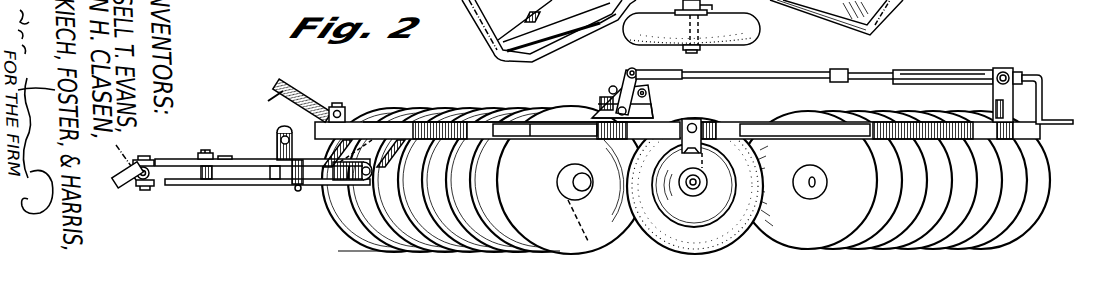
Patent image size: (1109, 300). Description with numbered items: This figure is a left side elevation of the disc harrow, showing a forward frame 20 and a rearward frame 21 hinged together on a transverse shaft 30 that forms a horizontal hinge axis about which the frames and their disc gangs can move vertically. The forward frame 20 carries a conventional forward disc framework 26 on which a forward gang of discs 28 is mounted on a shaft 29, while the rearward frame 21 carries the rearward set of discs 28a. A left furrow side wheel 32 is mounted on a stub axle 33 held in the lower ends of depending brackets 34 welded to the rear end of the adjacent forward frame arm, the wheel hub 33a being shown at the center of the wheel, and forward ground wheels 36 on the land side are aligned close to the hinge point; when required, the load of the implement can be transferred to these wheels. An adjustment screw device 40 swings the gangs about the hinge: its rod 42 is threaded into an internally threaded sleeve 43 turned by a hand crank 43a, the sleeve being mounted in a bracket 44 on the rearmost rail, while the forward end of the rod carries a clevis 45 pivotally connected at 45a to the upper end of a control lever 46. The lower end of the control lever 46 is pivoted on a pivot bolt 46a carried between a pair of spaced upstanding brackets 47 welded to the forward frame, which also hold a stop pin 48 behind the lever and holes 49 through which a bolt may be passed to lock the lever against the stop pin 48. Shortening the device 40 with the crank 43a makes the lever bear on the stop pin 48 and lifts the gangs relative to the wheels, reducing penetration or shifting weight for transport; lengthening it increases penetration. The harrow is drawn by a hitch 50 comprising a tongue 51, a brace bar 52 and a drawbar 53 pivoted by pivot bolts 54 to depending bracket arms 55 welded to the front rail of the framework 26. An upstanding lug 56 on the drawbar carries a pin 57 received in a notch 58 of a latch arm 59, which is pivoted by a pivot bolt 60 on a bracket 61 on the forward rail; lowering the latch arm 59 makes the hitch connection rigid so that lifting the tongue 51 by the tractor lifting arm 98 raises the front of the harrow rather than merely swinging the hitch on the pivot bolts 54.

The forward frame 20 is at (502, 118).
The rearward frame 21 is at (748, 118).
The forward disc framework 26 is at (441, 122).
The forward gang of discs 28 is at (345, 218).
The rearward set of discs 28a is at (1042, 188).
The shaft 29 is at (594, 246).
The transverse shaft 30 is at (693, 124).
The left furrow side wheel 32 is at (720, 44).
The stub axle 33 is at (681, 20).
The wheel hub 33a is at (688, 194).
The depending brackets 34 is at (690, 8).
The forward ground wheels 36 is at (712, 8).
The adjustment screw device 40 is at (930, 71).
The rod 42 is at (866, 70).
The internally threaded sleeve 43 is at (970, 72).
The hand crank 43a is at (1042, 90).
The bracket 44 is at (1007, 73).
The clevis 45 is at (647, 70).
The pivotal connection 45a is at (628, 72).
The control lever 46 is at (618, 78).
The pivot bolt 46a is at (655, 109).
The upstanding brackets 47 is at (598, 107).
The stop pin 48 is at (646, 90).
The holes 49 is at (609, 90).
The hitch 50 is at (205, 151).
The tongue 51 is at (188, 158).
The brace bar 52 is at (224, 156).
The drawbar 53 is at (297, 180).
The pivot bolts 54 is at (360, 175).
The depending bracket arms 55 is at (378, 162).
The upstanding lug 56 is at (276, 144).
The pin 57 is at (287, 135).
The notch 58 is at (278, 99).
The latch arm 59 is at (317, 96).
The pivot bolt 60 is at (346, 116).
The bracket 61 is at (333, 110).
The lifting arm 98 is at (144, 186).